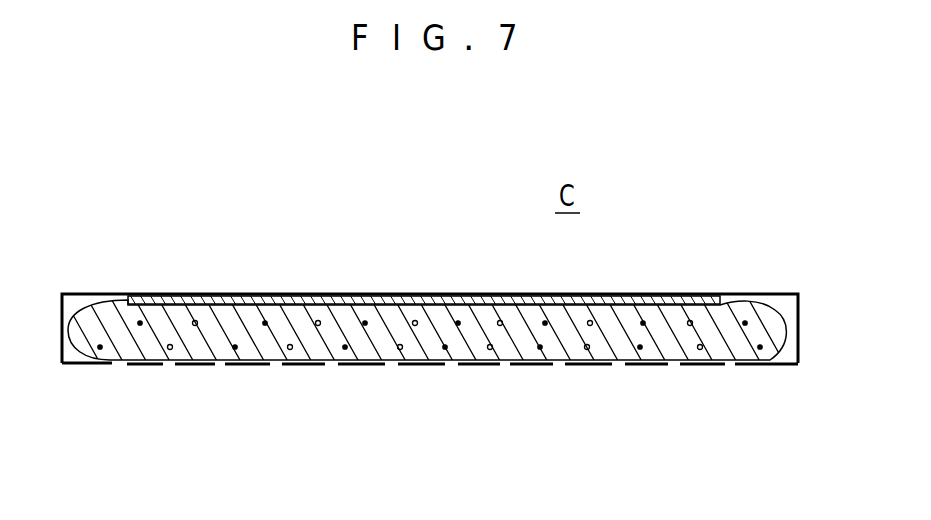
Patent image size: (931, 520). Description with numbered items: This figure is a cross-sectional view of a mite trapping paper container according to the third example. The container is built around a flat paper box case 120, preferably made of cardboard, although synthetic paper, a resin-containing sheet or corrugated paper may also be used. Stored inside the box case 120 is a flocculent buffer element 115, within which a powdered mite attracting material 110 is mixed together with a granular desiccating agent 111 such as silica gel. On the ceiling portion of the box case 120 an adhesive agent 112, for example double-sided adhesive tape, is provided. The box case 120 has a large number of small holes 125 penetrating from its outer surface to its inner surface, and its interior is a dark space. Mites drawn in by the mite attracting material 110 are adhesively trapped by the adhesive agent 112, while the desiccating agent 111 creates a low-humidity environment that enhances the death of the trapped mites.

The mite attracting material 110 is at (265, 321).
The desiccating agent 111 is at (318, 325).
The adhesive agent 112 is at (450, 297).
The buffer element 115 is at (645, 325).
The box case 120 is at (108, 293).
The small holes 125 is at (265, 368).